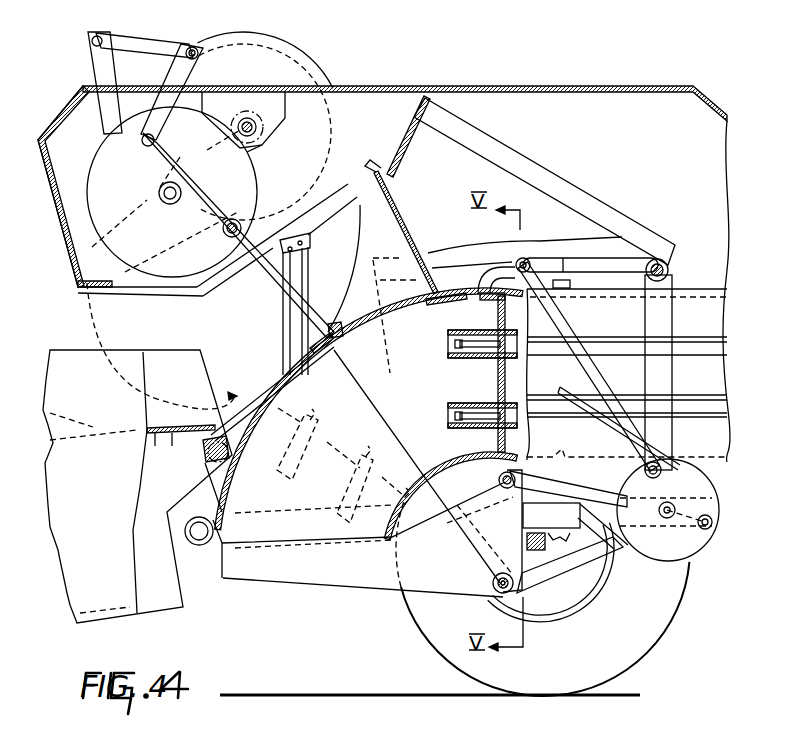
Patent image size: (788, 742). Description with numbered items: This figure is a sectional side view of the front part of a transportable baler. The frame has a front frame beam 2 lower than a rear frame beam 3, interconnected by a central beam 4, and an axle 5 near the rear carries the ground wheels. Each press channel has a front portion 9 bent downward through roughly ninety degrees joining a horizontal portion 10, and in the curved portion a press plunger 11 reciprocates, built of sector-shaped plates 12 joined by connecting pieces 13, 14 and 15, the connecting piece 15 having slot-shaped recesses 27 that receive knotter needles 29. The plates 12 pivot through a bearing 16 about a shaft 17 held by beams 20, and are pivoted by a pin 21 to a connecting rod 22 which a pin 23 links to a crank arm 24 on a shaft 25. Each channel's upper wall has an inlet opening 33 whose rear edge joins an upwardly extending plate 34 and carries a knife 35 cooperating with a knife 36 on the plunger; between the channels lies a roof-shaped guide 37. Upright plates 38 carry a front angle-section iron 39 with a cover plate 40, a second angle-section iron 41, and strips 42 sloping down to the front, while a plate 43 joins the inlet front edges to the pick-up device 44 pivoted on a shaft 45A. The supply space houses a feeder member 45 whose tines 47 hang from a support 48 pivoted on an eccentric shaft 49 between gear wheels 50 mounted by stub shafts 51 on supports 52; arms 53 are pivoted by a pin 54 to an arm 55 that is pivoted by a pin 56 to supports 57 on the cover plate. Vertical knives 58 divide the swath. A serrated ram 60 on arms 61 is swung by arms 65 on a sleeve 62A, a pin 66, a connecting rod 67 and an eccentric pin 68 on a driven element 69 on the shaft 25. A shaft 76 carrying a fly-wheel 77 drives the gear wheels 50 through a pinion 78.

The frame beam 2 is at (198, 546).
The frame beam 3 is at (552, 543).
The beam 4 is at (588, 530).
The axle 5 is at (526, 545).
The portion 9 is at (222, 512).
The horizontal portion 10 is at (712, 291).
The press plunger 11 is at (524, 513).
The sector-shaped plates 12 is at (470, 560).
The connecting piece 13 is at (402, 318).
The connecting piece 14 is at (455, 472).
The connecting piece 15 is at (500, 376).
The bearing 16 is at (493, 583).
The shaft 17 is at (493, 594).
The beams 20 is at (551, 574).
The pin 21 is at (503, 487).
The connecting rod 22 is at (598, 480).
The pin 23 is at (710, 526).
The arm 24 is at (708, 500).
The shaft 25 is at (668, 520).
The slot-shaped recesses 27 is at (462, 404).
The needles 29 is at (450, 383).
The inlet opening 33 is at (341, 330).
The plate 34 is at (412, 213).
The knife 35 is at (428, 302).
The knife 36 is at (481, 276).
The roof-shaped guide 37 is at (366, 247).
The upright plates 38 is at (577, 93).
The angle-section iron 39 is at (78, 280).
The cover plate 40 is at (62, 122).
The angle-section iron 41 is at (372, 166).
The strips 42 is at (172, 295).
The plate 43 is at (258, 392).
The pick-up device 44 is at (104, 616).
The feeder member 45 is at (78, 180).
The shaft 45A is at (208, 460).
The tines 47 is at (268, 284).
The support 48 is at (214, 235).
The shaft 49 is at (234, 218).
The gear wheels 50 is at (214, 268).
The stub shafts 51 is at (163, 200).
The supports 52 is at (286, 122).
The arms 53 is at (92, 67).
The pin 54 is at (142, 142).
The arm 55 is at (137, 48).
The pin 56 is at (193, 47).
The supports 57 is at (205, 80).
The knives 58 is at (283, 336).
The ram 60 is at (400, 133).
The arms 61 is at (560, 168).
The sleeve 62A is at (670, 260).
The arms 65 is at (562, 261).
The pin 66 is at (533, 258).
The connecting rod 67 is at (600, 381).
The eccentric pin 68 is at (662, 474).
The driven element 69 is at (690, 548).
The shaft 76 is at (256, 120).
The fly-wheel 77 is at (332, 128).
The pinion 78 is at (262, 147).